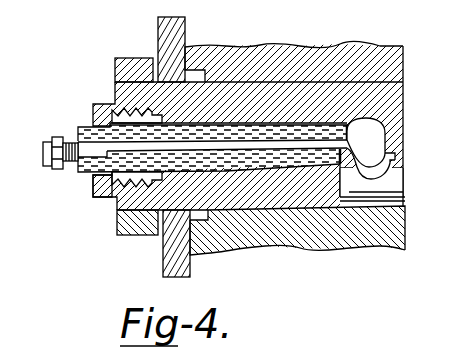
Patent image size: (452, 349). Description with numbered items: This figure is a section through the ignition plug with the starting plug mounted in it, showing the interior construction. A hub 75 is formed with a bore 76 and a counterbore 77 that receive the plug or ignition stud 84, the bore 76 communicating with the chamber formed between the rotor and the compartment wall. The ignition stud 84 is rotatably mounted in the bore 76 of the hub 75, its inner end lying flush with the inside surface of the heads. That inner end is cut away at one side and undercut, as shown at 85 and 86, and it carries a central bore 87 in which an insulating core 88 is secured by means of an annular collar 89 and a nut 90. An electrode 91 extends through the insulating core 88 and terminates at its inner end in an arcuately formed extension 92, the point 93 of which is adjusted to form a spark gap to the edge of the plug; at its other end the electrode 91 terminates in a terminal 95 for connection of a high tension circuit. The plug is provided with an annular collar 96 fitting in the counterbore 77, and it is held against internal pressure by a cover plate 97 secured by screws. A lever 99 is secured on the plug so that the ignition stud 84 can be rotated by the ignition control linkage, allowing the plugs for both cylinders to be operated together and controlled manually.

The hub 75 is at (258, 236).
The bore 76 is at (406, 197).
The counterbore 77 is at (204, 64).
The ignition stud 84 is at (403, 82).
The cut-away 85 is at (394, 185).
The undercut 86 is at (391, 90).
The central bore 87 is at (326, 170).
The insulating core 88 is at (279, 170).
The annular collar 89 is at (116, 211).
The nut 90 is at (93, 188).
The electrode 91 is at (266, 142).
The curved channel 92 is at (378, 178).
The point 93 is at (372, 133).
The terminal 95 is at (44, 152).
The annular collar 96 is at (163, 250).
The cover plate 97 is at (162, 33).
The lever 99 is at (116, 72).